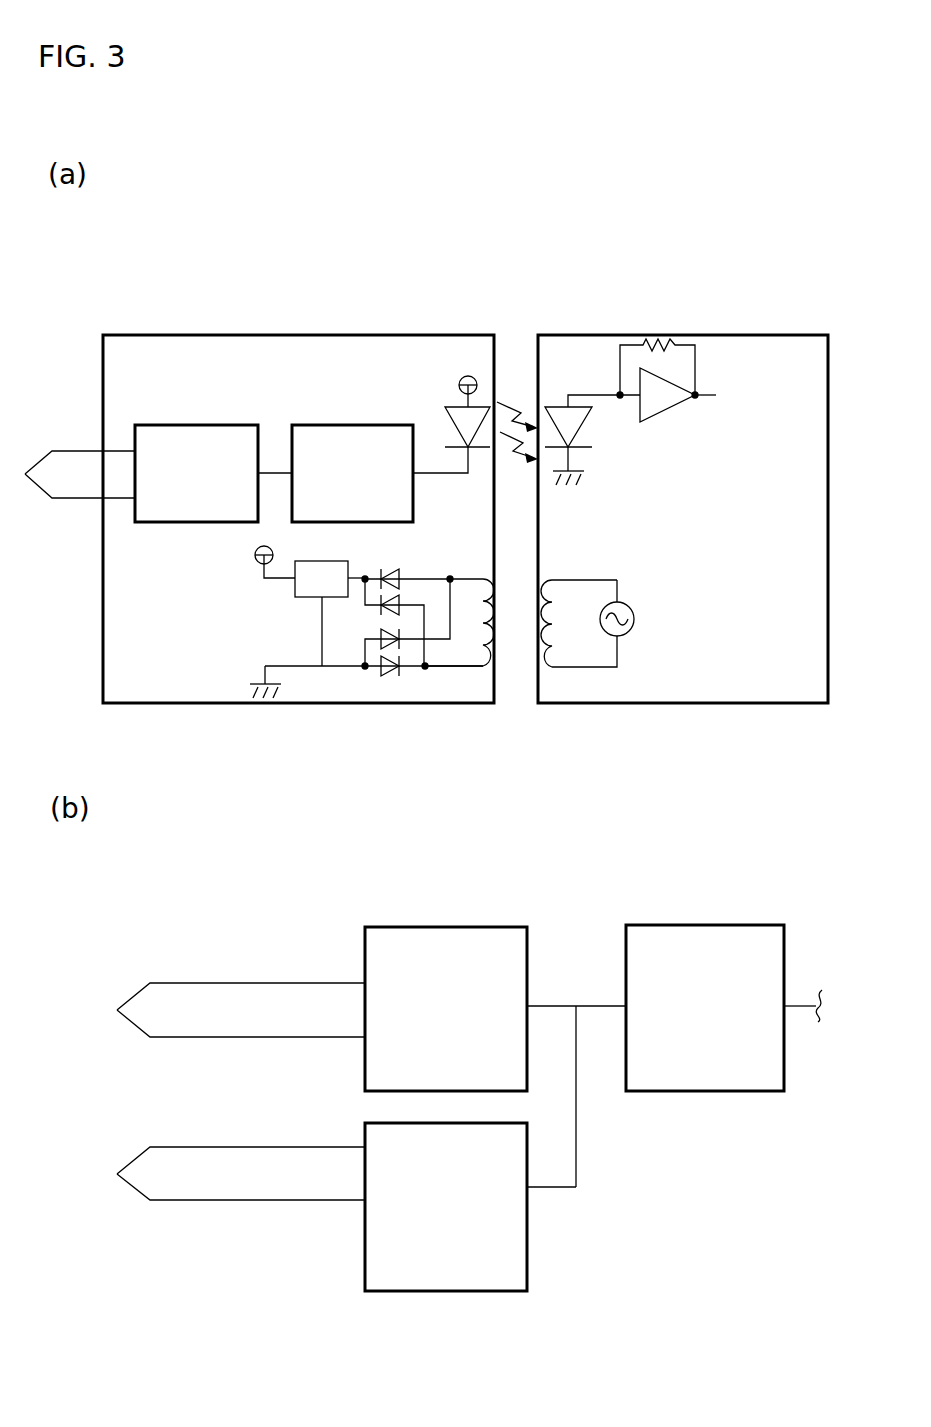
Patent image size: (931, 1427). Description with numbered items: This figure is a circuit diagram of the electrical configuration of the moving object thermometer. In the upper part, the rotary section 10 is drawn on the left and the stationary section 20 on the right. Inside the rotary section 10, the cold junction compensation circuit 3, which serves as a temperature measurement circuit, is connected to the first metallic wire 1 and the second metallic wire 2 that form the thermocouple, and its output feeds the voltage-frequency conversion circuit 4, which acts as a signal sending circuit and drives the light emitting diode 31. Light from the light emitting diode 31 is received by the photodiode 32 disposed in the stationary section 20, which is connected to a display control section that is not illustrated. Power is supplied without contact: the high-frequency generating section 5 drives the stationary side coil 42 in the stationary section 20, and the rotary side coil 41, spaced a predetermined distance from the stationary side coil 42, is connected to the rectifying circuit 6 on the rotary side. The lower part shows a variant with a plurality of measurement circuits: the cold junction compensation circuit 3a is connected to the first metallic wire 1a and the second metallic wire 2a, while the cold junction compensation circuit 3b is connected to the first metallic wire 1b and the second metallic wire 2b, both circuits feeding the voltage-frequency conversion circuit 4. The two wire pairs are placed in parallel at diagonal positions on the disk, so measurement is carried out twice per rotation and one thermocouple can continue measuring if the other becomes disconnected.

The first metallic wire 1 is at (78, 449).
The second metallic wire 2 is at (74, 500).
The cold junction compensation circuit 3 is at (210, 445).
The voltage-frequency conversion circuit 4 is at (352, 440).
The high-frequency generating section 5 is at (632, 634).
The rectifying circuit 6 is at (354, 637).
The rotary section 10 is at (321, 280).
The stationary section 20 is at (711, 279).
The light emitting diode 31 is at (446, 386).
The photodiode 32 is at (570, 382).
The rotary side coil 41 is at (478, 684).
The stationary side coil 42 is at (562, 684).
The first metallic wire 1a is at (205, 983).
The second metallic wire 2a is at (205, 1037).
The first metallic wire 1b is at (205, 1147).
The second metallic wire 2b is at (205, 1200).
The cold junction compensation circuit 3a is at (443, 940).
The cold junction compensation circuit 3b is at (510, 1242).